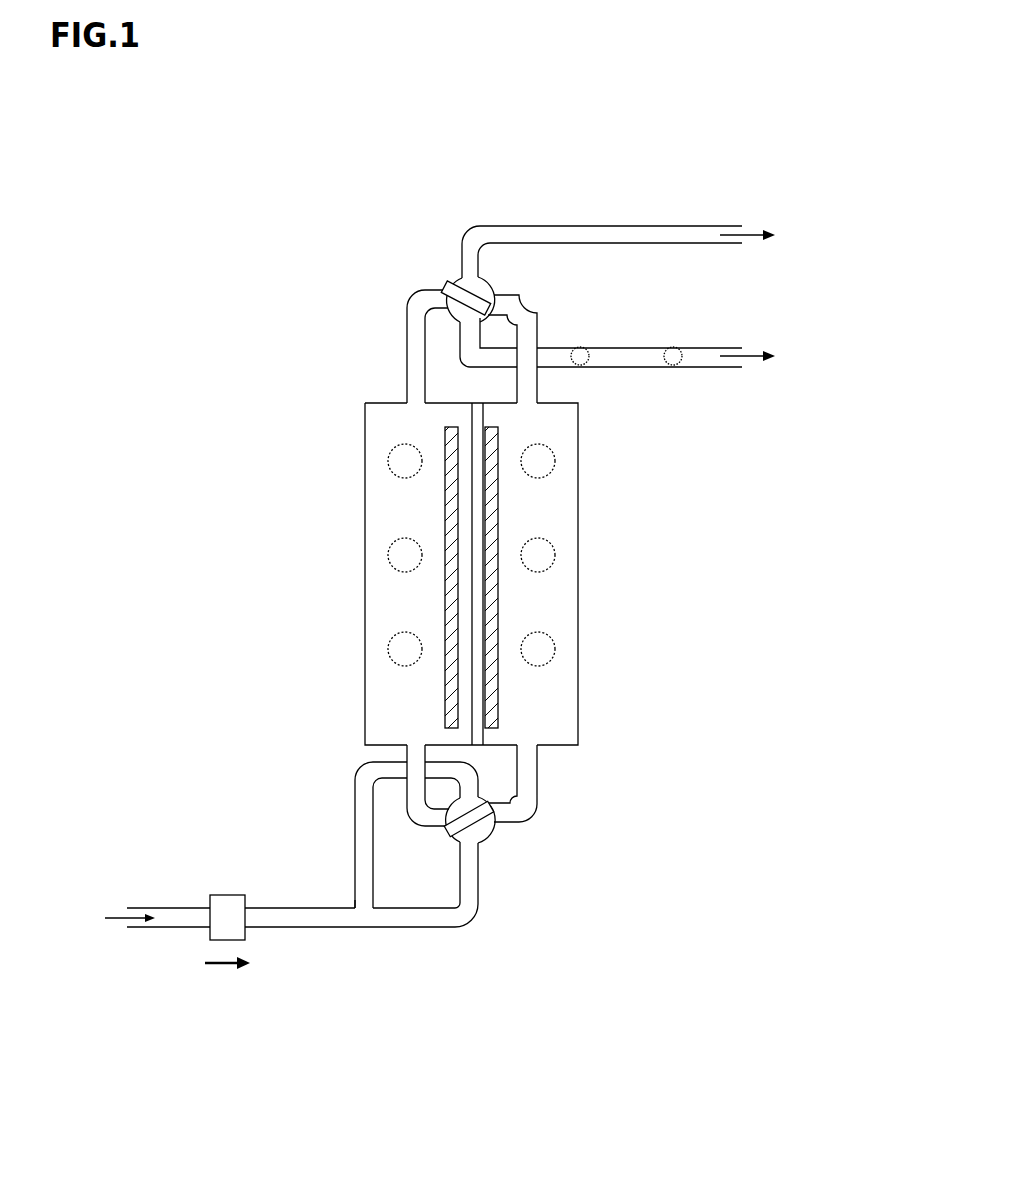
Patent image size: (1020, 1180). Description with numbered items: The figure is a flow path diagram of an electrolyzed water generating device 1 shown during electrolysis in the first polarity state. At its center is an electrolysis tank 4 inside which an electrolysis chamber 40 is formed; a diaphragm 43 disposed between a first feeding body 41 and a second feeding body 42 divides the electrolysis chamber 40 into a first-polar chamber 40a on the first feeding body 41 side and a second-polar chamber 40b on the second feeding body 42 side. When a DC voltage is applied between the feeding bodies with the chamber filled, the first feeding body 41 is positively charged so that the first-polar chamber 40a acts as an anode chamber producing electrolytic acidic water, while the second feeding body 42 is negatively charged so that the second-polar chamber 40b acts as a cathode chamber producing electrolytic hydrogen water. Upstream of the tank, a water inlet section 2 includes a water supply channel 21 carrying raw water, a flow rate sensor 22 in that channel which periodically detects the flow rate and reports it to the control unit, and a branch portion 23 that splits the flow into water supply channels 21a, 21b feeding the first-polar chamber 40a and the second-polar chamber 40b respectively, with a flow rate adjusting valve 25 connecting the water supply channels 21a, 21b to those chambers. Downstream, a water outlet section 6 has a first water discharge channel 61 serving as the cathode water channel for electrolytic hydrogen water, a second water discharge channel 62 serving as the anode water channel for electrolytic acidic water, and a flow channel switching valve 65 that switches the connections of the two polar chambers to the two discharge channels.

The electrolyzed water generating device 1 is at (762, 115).
The water inlet section 2 is at (433, 938).
The water supply channel 21 is at (300, 918).
The water supply channel 21a is at (467, 893).
The water supply channel 21b is at (365, 835).
The flow rate sensor 22 is at (222, 930).
The branch portion 23 is at (357, 927).
The flow rate adjusting valve 25 is at (490, 834).
The electrolysis tank 4 is at (362, 432).
The electrolysis chamber 40 is at (536, 502).
The first-polar chamber 40a is at (540, 520).
The second-polar chamber 40b is at (403, 513).
The first feeding body 41 is at (493, 612).
The second feeding body 42 is at (452, 610).
The diaphragm 43 is at (473, 420).
The water outlet section 6 is at (533, 216).
The first water discharge channel 61 is at (628, 356).
The second water discharge channel 62 is at (627, 226).
The flow channel switching valve 65 is at (448, 286).